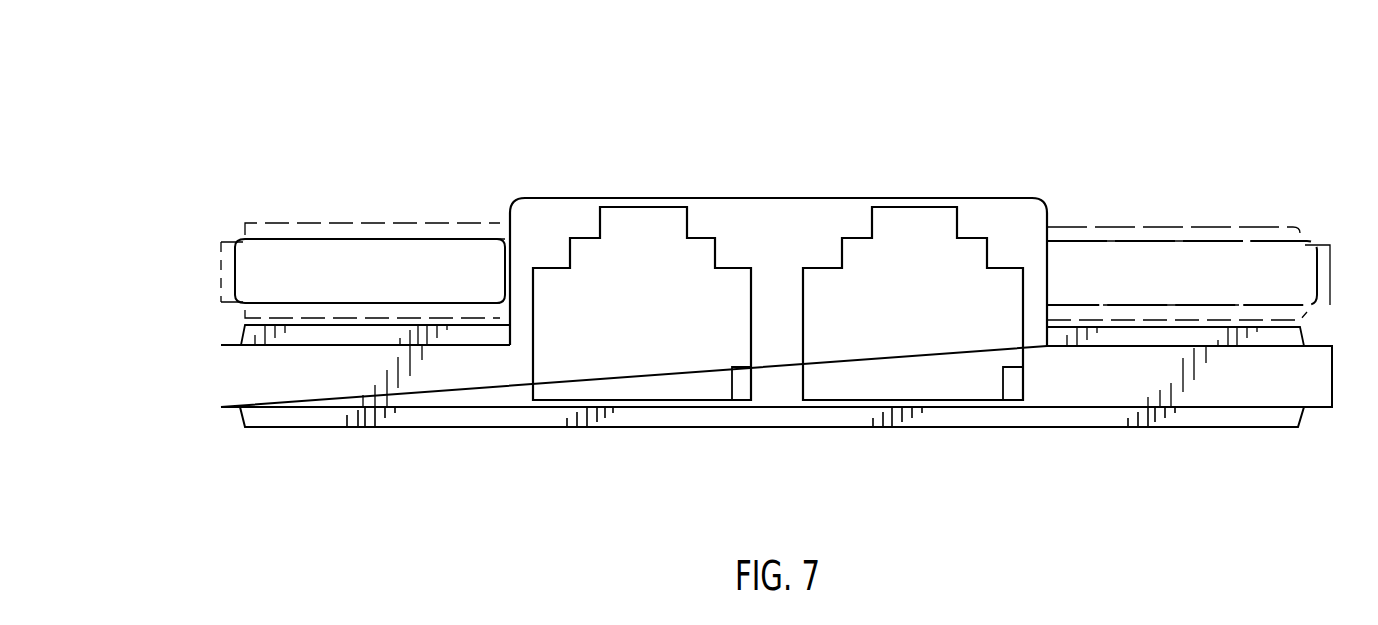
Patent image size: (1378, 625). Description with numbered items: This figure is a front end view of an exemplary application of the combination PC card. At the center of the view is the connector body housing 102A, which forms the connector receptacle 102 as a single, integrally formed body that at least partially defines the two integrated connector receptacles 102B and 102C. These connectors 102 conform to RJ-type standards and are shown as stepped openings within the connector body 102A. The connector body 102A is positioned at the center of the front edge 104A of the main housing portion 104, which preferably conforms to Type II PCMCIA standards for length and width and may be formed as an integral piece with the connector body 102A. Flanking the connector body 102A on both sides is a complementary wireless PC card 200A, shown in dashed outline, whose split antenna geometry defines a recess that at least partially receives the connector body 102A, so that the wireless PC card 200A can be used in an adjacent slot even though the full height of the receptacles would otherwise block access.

The wireless PC card 200A is at (190, 252).
The connector body housing 102A is at (758, 198).
The connector receptacle 102B is at (582, 365).
The connector receptacle 102C is at (927, 372).
The connector receptacle 102 is at (862, 445).
The main housing portion 104 is at (221, 380).
The front edge 104A is at (1258, 375).